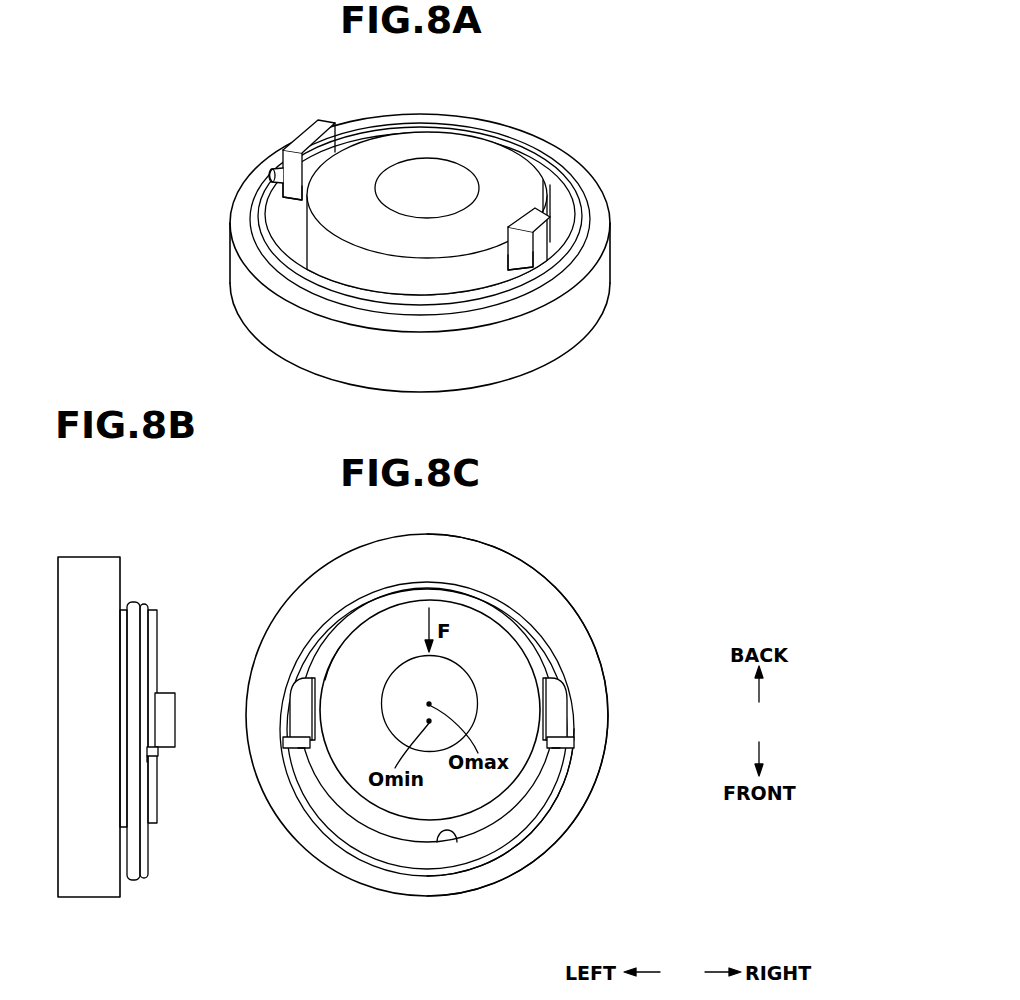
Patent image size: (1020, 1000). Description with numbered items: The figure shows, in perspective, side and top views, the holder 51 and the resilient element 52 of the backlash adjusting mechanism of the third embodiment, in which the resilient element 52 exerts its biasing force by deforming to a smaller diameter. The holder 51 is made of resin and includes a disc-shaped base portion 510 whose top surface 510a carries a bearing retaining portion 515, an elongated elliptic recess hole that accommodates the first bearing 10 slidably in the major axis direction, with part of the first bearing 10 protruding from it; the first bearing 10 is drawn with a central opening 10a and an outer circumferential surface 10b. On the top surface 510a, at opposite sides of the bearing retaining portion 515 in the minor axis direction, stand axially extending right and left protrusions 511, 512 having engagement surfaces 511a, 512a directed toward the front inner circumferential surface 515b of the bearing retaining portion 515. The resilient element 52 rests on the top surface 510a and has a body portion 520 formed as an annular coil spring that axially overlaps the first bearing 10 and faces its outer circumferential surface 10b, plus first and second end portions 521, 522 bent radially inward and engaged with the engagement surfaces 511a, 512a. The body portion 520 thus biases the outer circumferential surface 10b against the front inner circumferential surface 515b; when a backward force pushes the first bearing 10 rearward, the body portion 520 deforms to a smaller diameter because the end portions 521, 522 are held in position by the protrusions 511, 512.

In FIG. 8A, the first bearing 10 is at (460, 132).
In FIG. 8C, the first bearing 10 is at (473, 625).
In FIG. 8A, the lens aperture hole 10a is at (412, 177).
In FIG. 8C, the lens aperture hole 10a is at (398, 670).
In FIG. 8A, the outer circumferential surface 10b is at (440, 282).
In FIG. 8C, the outer circumferential surface 10b is at (333, 640).
In FIG. 8C, the holder 51 is at (611, 690).
In FIG. 8B, the base portion 510 is at (87, 557).
In FIG. 8B, the top surface 510a is at (124, 607).
In FIG. 8C, the top surface 510a is at (602, 732).
In FIG. 8A, the right protrusion 511 is at (537, 203).
In FIG. 8C, the right protrusion 511 is at (553, 698).
In FIG. 8A, the engagement surface 511a is at (520, 247).
In FIG. 8C, the engagement surface 511a is at (563, 755).
In FIG. 8A, the left protrusion 512 is at (309, 138).
In FIG. 8B, the left protrusion 512 is at (175, 708).
In FIG. 8C, the left protrusion 512 is at (303, 707).
In FIG. 8A, the engagement surface 512a is at (283, 157).
In FIG. 8B, the engagement surface 512a is at (160, 749).
In FIG. 8C, the engagement surface 512a is at (303, 753).
In FIG. 8C, the bearing retaining portion 515 is at (413, 832).
In FIG. 8C, the front inner circumferential surface 515b is at (452, 835).
In FIG. 8C, the resilient element 52 is at (545, 833).
In FIG. 8A, the body portion 520 is at (382, 303).
In FIG. 8B, the body portion 520 is at (138, 602).
In FIG. 8C, the body portion 520 is at (537, 625).
In FIG. 8C, the first end portion 521 is at (565, 750).
In FIG. 8A, the second end portion 522 is at (270, 186).
In FIG. 8B, the second end portion 522 is at (147, 756).
In FIG. 8C, the second end portion 522 is at (303, 750).